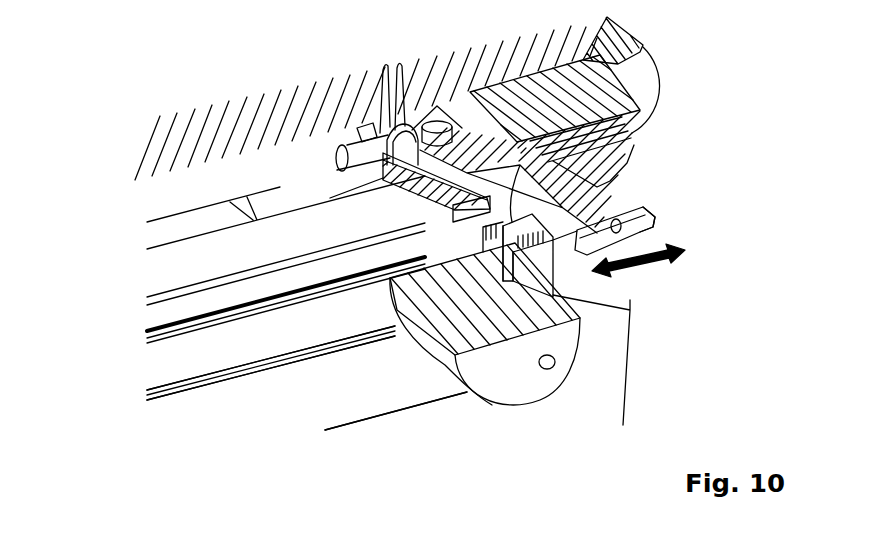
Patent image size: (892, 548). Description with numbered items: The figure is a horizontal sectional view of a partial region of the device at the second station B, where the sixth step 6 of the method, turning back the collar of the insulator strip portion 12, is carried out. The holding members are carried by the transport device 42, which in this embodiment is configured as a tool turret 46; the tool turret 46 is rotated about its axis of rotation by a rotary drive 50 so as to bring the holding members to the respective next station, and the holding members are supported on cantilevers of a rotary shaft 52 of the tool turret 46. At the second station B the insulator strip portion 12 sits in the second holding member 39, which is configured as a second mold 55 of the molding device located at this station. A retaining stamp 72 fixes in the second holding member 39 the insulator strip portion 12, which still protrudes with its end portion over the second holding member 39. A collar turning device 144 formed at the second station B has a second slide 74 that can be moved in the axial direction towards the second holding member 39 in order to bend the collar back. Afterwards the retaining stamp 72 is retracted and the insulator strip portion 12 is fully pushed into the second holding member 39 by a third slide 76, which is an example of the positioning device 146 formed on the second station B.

The rotary shaft 52 is at (183, 148).
The rotary drive 50 is at (648, 125).
The positioning device 146 is at (663, 217).
The third slide 76 is at (667, 240).
The sixth step 6 is at (660, 293).
The second slide 74 is at (530, 252).
The collar turning device 144 is at (532, 275).
The retaining stamp 72 is at (493, 392).
The transport device 42 is at (345, 433).
The tool turret 46 is at (345, 433).
The insulator strip portion 12 is at (292, 337).
The second holding member 39 is at (208, 410).
The second station B is at (265, 425).
The mold 55 is at (231, 297).